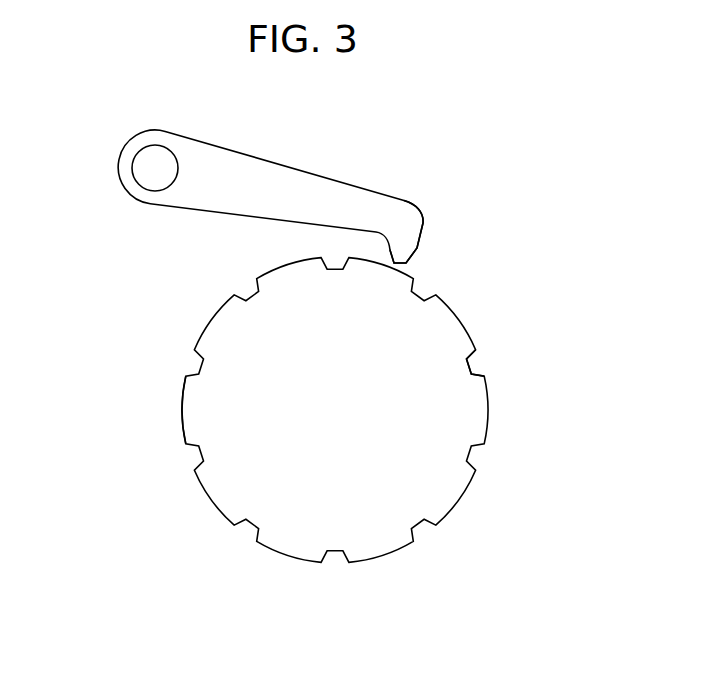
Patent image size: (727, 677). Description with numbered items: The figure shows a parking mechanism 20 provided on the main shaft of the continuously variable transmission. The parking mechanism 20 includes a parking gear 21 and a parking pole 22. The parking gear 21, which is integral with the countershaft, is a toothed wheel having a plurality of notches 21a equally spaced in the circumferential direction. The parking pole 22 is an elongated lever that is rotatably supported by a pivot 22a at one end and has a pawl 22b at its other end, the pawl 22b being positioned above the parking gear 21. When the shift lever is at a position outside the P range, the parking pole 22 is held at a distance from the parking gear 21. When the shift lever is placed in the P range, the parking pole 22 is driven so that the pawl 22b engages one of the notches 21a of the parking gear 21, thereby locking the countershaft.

The parking mechanism 20 is at (472, 297).
The parking gear 21 is at (472, 407).
The notches 21a is at (473, 363).
The parking pole 22 is at (297, 183).
The pivot 22a is at (157, 160).
The pawl 22b is at (403, 251).